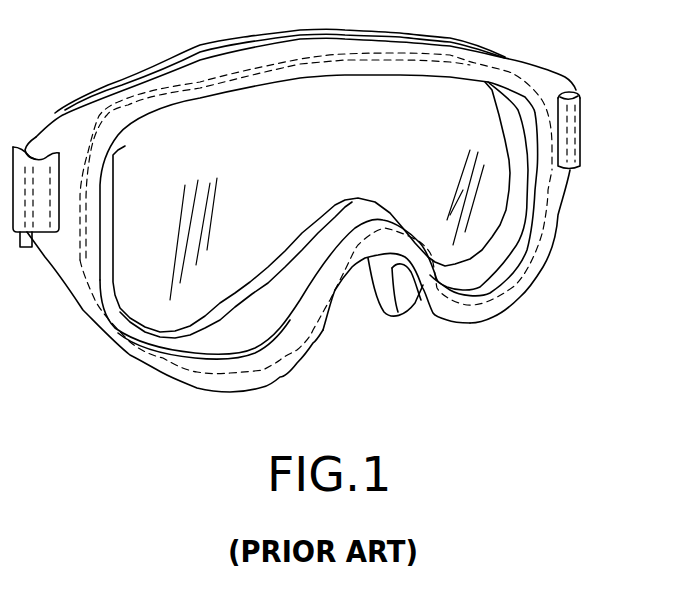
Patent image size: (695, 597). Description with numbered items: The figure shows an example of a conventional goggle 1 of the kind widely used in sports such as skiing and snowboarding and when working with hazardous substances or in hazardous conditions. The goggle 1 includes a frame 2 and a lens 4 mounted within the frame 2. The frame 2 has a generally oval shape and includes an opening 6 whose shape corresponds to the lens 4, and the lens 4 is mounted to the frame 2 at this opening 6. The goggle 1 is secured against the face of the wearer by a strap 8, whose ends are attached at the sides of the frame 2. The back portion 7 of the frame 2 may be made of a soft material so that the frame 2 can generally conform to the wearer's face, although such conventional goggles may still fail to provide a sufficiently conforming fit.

The goggle 1 is at (334, 202).
The frame 2 is at (65, 113).
The lens 4 is at (483, 227).
The opening 6 is at (277, 228).
The back portion 7 is at (100, 92).
The strap 8 is at (59, 232).